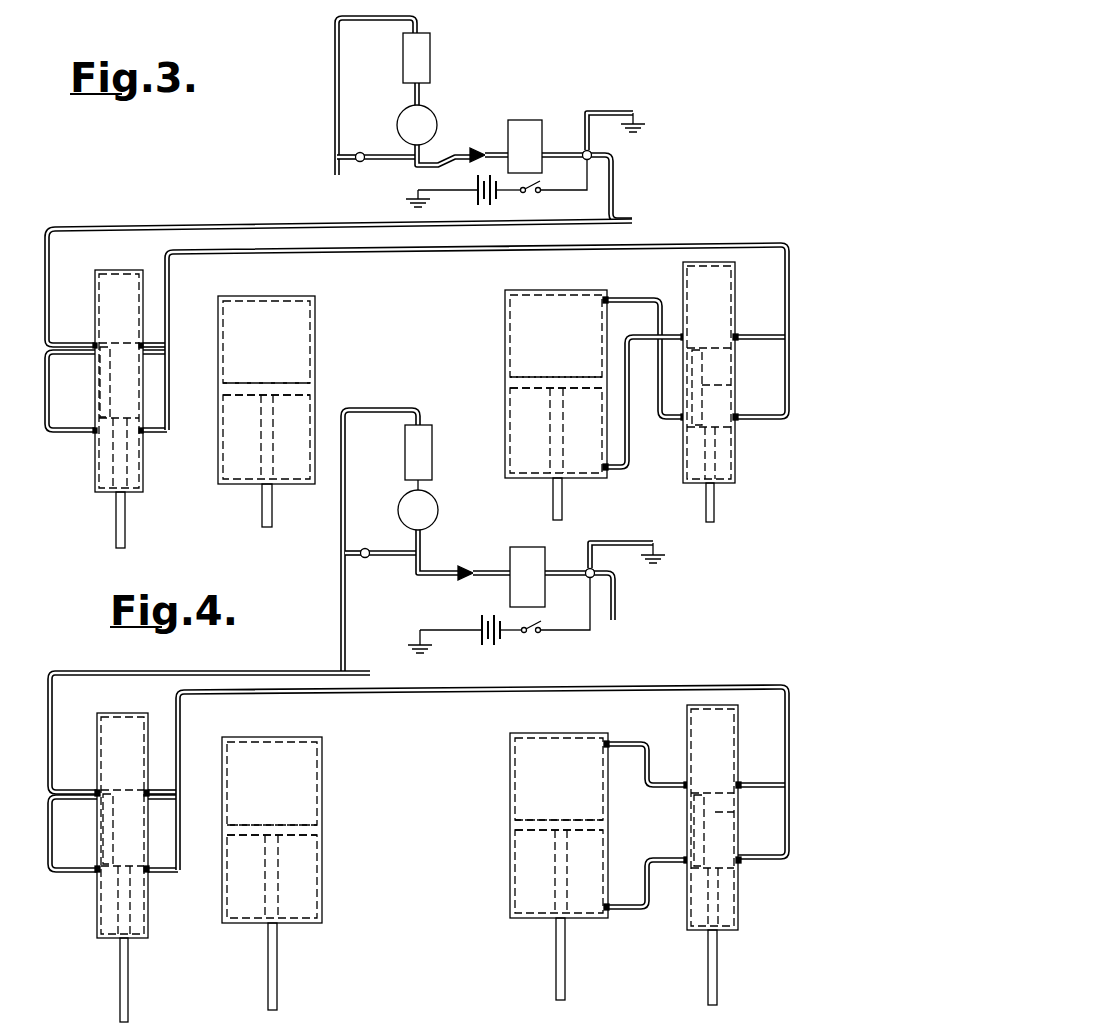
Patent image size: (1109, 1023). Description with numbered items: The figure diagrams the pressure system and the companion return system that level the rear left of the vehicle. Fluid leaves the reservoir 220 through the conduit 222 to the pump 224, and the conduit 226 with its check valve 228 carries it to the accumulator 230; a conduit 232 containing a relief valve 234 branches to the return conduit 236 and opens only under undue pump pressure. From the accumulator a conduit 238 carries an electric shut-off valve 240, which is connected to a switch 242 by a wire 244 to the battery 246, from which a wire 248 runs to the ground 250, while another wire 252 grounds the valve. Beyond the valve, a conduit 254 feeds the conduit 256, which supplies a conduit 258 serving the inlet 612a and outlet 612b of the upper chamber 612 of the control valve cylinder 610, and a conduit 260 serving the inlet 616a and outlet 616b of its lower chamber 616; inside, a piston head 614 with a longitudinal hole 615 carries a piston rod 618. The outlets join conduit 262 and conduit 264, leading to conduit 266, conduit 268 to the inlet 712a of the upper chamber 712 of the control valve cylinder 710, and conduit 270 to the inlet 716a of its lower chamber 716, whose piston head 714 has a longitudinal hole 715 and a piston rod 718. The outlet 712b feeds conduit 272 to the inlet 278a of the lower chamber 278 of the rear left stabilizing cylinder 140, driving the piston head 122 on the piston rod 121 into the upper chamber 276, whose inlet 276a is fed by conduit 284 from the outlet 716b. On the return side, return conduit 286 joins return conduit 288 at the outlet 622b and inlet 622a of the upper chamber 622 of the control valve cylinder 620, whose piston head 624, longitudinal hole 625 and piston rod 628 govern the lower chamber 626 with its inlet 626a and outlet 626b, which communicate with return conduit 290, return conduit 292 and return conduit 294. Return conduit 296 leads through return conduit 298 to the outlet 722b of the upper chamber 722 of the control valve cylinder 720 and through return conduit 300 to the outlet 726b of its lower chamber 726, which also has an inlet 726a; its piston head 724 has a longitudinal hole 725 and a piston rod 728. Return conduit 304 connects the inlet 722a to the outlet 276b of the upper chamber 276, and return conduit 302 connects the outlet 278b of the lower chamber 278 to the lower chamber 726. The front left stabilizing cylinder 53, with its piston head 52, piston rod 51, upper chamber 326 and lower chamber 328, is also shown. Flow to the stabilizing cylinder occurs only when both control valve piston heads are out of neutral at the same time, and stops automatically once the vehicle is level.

In FIG. 3, the piston rod 51 is at (265, 506).
In FIG. 4, the piston rod 51 is at (268, 961).
In FIG. 3, the piston head 52 is at (305, 389).
In FIG. 4, the piston head 52 is at (305, 831).
In FIG. 3, the front left stabilizing cylinder 53 is at (263, 296).
In FIG. 4, the front left stabilizing cylinder 53 is at (283, 737).
In FIG. 3, the piston rod 121 is at (556, 496).
In FIG. 4, the piston rod 121 is at (556, 947).
In FIG. 3, the piston head 122 is at (515, 389).
In FIG. 4, the piston head 122 is at (520, 832).
In FIG. 3, the rear left stabilizing cylinder 140 is at (553, 290).
In FIG. 4, the rear left stabilizing cylinder 140 is at (548, 733).
In FIG. 3, the reservoir 220 is at (420, 46).
In FIG. 4, the reservoir 220 is at (418, 457).
In FIG. 3, the conduit 222 is at (420, 98).
In FIG. 3, the pump 224 is at (417, 125).
In FIG. 4, the pump 224 is at (418, 510).
In FIG. 3, the conduit 226 is at (440, 158).
In FIG. 4, the conduit 226 is at (432, 572).
In FIG. 3, the check valve 228 is at (478, 150).
In FIG. 4, the check valve 228 is at (470, 567).
In FIG. 3, the accumulator 230 is at (525, 146).
In FIG. 4, the accumulator 230 is at (527, 577).
In FIG. 3, the conduit 232 is at (387, 167).
In FIG. 4, the conduit 232 is at (390, 568).
In FIG. 3, the relief valve 234 is at (360, 152).
In FIG. 4, the relief valve 234 is at (366, 549).
In FIG. 3, the return conduit 236 is at (405, 17).
In FIG. 4, the return conduit 236 is at (345, 471).
In FIG. 3, the conduit 238 is at (558, 150).
In FIG. 4, the conduit 238 is at (560, 568).
In FIG. 3, the electric shut-off valve 240 is at (602, 139).
In FIG. 4, the electric shut-off valve 240 is at (605, 561).
In FIG. 3, the switch 242 is at (541, 186).
In FIG. 4, the switch 242 is at (544, 628).
In FIG. 3, the wire 244 is at (513, 194).
In FIG. 3, the battery 246 is at (478, 187).
In FIG. 4, the battery 246 is at (482, 621).
In FIG. 3, the wire 248 is at (438, 193).
In FIG. 4, the wire 248 is at (455, 633).
In FIG. 3, the ground 250 is at (640, 128).
In FIG. 4, the ground 250 is at (663, 563).
In FIG. 3, the wire 252 is at (617, 113).
In FIG. 4, the wire 252 is at (628, 543).
In FIG. 3, the conduit 254 is at (615, 181).
In FIG. 4, the conduit 254 is at (617, 603).
In FIG. 3, the conduit 256 is at (283, 226).
In FIG. 3, the conduit 258 is at (73, 353).
In FIG. 3, the conduit 260 is at (47, 413).
In FIG. 3, the conduit 262 is at (170, 403).
In FIG. 3, the conduit 264 is at (160, 345).
In FIG. 3, the conduit 266 is at (170, 291).
In FIG. 3, the conduit 268 is at (761, 326).
In FIG. 3, the conduit 270 is at (773, 430).
In FIG. 3, the conduit 272 is at (628, 337).
In FIG. 3, the upper chamber 276 is at (520, 326).
In FIG. 4, the upper chamber 276 is at (530, 773).
In FIG. 3, the inlet 276a is at (605, 300).
In FIG. 4, the outlet 276b is at (612, 744).
In FIG. 3, the lower chamber 278 is at (515, 429).
In FIG. 4, the lower chamber 278 is at (518, 867).
In FIG. 3, the inlet 278a is at (610, 471).
In FIG. 4, the outlet 278b is at (607, 913).
In FIG. 3, the conduit 284 is at (630, 300).
In FIG. 4, the return conduit 286 is at (282, 675).
In FIG. 4, the return conduit 288 is at (75, 798).
In FIG. 4, the return conduit 290 is at (50, 851).
In FIG. 4, the return conduit 292 is at (180, 823).
In FIG. 4, the return conduit 294 is at (165, 792).
In FIG. 4, the return conduit 296 is at (606, 689).
In FIG. 4, the return conduit 298 is at (762, 772).
In FIG. 4, the return conduit 300 is at (768, 859).
In FIG. 4, the return conduit 302 is at (645, 907).
In FIG. 4, the return conduit 304 is at (628, 744).
In FIG. 3, the upper chamber 326 is at (292, 331).
In FIG. 4, the upper chamber 326 is at (292, 775).
In FIG. 3, the lower chamber 328 is at (300, 415).
In FIG. 4, the lower chamber 328 is at (292, 883).
In FIG. 3, the control valve cylinder 610 is at (112, 270).
In FIG. 3, the upper chamber 612 is at (98, 299).
In FIG. 3, the inlet 612a is at (95, 345).
In FIG. 3, the outlet 612b is at (142, 345).
In FIG. 3, the piston head 614 is at (130, 371).
In FIG. 3, the longitudinal hole 615 is at (105, 401).
In FIG. 3, the lower chamber 616 is at (105, 471).
In FIG. 3, the inlet 616a is at (95, 433).
In FIG. 3, the outlet 616b is at (145, 432).
In FIG. 3, the piston rod 618 is at (116, 519).
In FIG. 4, the control valve cylinder 620 is at (130, 703).
In FIG. 4, the upper chamber 622 is at (100, 737).
In FIG. 4, the inlet 622a is at (145, 792).
In FIG. 4, the outlet 622b is at (98, 792).
In FIG. 4, the piston head 624 is at (135, 848).
In FIG. 4, the longitudinal hole 625 is at (107, 837).
In FIG. 4, the lower chamber 626 is at (104, 917).
In FIG. 4, the inlet 626a is at (148, 873).
In FIG. 4, the outlet 626b is at (97, 873).
In FIG. 4, the piston rod 628 is at (120, 973).
In FIG. 3, the control valve cylinder 710 is at (707, 262).
In FIG. 3, the upper chamber 712 is at (725, 277).
In FIG. 3, the inlet 712a is at (737, 337).
In FIG. 3, the outlet 712b is at (683, 337).
In FIG. 3, the piston head 714 is at (725, 359).
In FIG. 3, the longitudinal hole 715 is at (720, 388).
In FIG. 3, the lower chamber 716 is at (720, 457).
In FIG. 3, the inlet 716a is at (737, 431).
In FIG. 3, the outlet 716b is at (683, 423).
In FIG. 3, the piston rod 718 is at (716, 507).
In FIG. 4, the control valve cylinder 720 is at (708, 707).
In FIG. 4, the upper chamber 722 is at (715, 731).
In FIG. 4, the inlet 722a is at (687, 785).
In FIG. 4, the outlet 722b is at (738, 785).
In FIG. 4, the piston head 724 is at (720, 815).
In FIG. 4, the longitudinal hole 725 is at (695, 831).
In FIG. 4, the lower chamber 726 is at (722, 907).
In FIG. 4, the inlet 726a is at (684, 867).
In FIG. 4, the outlet 726b is at (740, 871).
In FIG. 4, the piston rod 728 is at (718, 958).